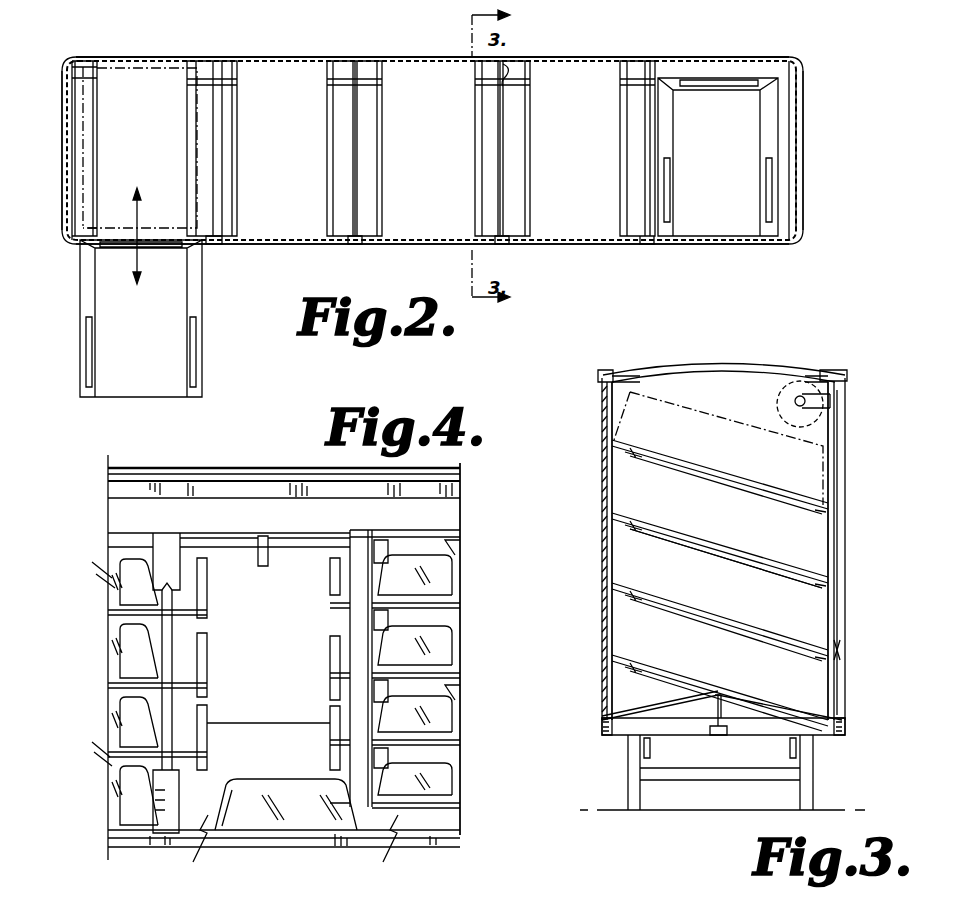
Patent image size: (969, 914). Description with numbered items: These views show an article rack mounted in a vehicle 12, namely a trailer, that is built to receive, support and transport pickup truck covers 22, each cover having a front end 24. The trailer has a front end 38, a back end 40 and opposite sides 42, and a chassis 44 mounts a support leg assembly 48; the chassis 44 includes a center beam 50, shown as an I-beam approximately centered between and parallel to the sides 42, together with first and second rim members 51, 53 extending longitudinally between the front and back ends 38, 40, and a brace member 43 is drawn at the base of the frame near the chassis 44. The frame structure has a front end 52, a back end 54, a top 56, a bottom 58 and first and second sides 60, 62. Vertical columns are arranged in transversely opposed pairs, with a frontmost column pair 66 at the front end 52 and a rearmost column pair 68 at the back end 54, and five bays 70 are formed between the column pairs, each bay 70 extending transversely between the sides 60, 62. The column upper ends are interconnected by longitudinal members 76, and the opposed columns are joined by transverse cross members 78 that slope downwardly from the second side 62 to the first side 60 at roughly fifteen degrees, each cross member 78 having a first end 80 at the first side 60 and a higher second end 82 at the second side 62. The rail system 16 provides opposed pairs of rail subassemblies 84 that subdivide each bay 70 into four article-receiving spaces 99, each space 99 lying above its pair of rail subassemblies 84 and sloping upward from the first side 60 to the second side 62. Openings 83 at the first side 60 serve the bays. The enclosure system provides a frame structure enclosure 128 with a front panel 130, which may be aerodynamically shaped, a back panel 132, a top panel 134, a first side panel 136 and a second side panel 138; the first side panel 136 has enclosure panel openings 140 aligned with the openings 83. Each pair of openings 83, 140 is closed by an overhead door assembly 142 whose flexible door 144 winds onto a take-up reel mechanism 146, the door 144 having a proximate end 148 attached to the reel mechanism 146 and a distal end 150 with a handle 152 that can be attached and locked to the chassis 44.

In FIG. 2, the vehicle 12 is at (389, 48).
In FIG. 2, the rail system 16 is at (320, 108).
In FIG. 3, the pickup truck cover 22 is at (832, 472).
In FIG. 2, the front end 24 is at (185, 248).
In FIG. 2, the front end 38 is at (800, 172).
In FIG. 2, the back end 40 is at (62, 158).
In FIG. 2, the opposite sides 42 is at (408, 57).
In FIG. 3, the brace 43 is at (640, 707).
In FIG. 3, the chassis 44 is at (686, 730).
In FIG. 3, the support leg assembly 48 is at (810, 790).
In FIG. 3, the center beam 50 is at (728, 730).
In FIG. 4, the first rim member 51 is at (255, 828).
In FIG. 3, the first rim member 51 is at (845, 737).
In FIG. 2, the front end 52 is at (772, 70).
In FIG. 3, the second rim member 53 is at (600, 737).
In FIG. 2, the back end 54 is at (100, 87).
In FIG. 3, the top 56 is at (598, 377).
In FIG. 3, the bottom 58 is at (600, 711).
In FIG. 2, the first side 60 is at (220, 245).
In FIG. 3, the first side 60 is at (845, 590).
In FIG. 2, the second side 62 is at (210, 61).
In FIG. 3, the second side 62 is at (611, 562).
In FIG. 2, the frontmost column pair 66 is at (815, 72).
In FIG. 2, the rearmost column pair 68 is at (92, 64).
In FIG. 2, the frame structure bay 70 is at (361, 148).
In FIG. 4, the frame structure bay 70 is at (273, 680).
In FIG. 3, the longitudinal member 76 is at (618, 375).
In FIG. 2, the transverse cross member 78 is at (353, 147).
In FIG. 3, the transverse cross member 78 is at (755, 553).
In FIG. 2, the first end 80 is at (505, 236).
In FIG. 2, the second end 82 is at (508, 76).
In FIG. 4, the opening 83 is at (385, 620).
In FIG. 2, the rail subassembly 84 is at (324, 188).
In FIG. 3, the article-receiving space 99 is at (718, 521).
In FIG. 2, the frame structure enclosure 128 is at (570, 64).
In FIG. 4, the frame structure enclosure 128 is at (226, 471).
In FIG. 2, the front panel 130 is at (800, 122).
In FIG. 2, the back panel 132 is at (62, 182).
In FIG. 4, the top panel 134 is at (262, 468).
In FIG. 3, the top panel 134 is at (712, 363).
In FIG. 2, the first side panel 136 is at (580, 245).
In FIG. 4, the first side panel 136 is at (456, 518).
In FIG. 3, the first side panel 136 is at (840, 500).
In FIG. 2, the second side panel 138 is at (628, 60).
In FIG. 3, the second side panel 138 is at (600, 505).
In FIG. 4, the enclosure panel opening 140 is at (372, 553).
In FIG. 4, the overhead door assembly 142 is at (264, 536).
In FIG. 4, the door 144 is at (290, 548).
In FIG. 3, the take-up reel mechanism 146 is at (797, 395).
In FIG. 3, the proximate end 148 is at (797, 424).
In FIG. 4, the distal end 150 is at (226, 547).
In FIG. 3, the distal end 150 is at (845, 643).
In FIG. 4, the handle 152 is at (263, 566).
In FIG. 3, the handle 152 is at (843, 660).